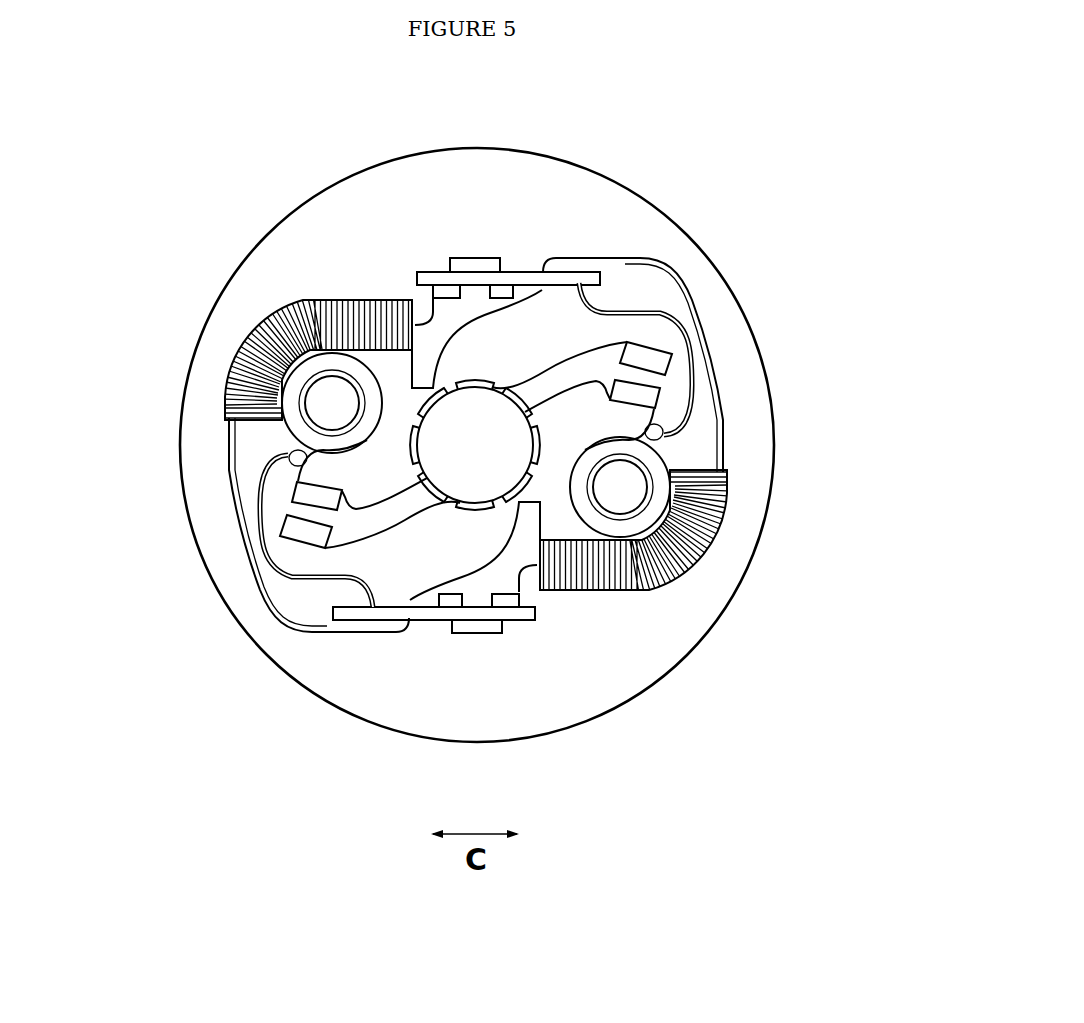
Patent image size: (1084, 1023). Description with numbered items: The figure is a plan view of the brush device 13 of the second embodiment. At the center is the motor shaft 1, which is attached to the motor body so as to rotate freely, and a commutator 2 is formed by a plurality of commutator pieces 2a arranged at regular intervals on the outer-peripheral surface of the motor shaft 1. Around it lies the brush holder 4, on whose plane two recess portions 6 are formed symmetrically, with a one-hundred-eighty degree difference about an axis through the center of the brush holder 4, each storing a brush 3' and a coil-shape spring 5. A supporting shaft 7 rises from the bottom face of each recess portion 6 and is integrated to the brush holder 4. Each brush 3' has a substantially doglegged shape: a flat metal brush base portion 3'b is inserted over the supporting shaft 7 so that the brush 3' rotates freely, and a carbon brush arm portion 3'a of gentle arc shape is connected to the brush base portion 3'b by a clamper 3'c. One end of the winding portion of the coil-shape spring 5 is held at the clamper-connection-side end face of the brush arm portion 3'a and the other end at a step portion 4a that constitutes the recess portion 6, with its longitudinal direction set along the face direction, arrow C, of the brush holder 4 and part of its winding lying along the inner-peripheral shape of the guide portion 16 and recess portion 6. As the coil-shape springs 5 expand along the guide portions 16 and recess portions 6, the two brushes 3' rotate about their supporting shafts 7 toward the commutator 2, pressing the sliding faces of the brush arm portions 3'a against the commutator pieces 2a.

The motor shaft 1 is at (475, 445).
The commutator 2 is at (485, 368).
The commutator pieces 2a is at (477, 512).
The brush 3' is at (553, 382).
The brush arm portion 3'a is at (374, 426).
The brush base portion 3'b is at (472, 445).
The clamper 3'c is at (472, 446).
The brush holder 4 is at (557, 672).
The step portion 4a is at (443, 274).
The coil-shape spring 5 is at (220, 413).
The recess portion 6 is at (422, 552).
The supporting shaft 7 is at (332, 403).
The brush device 13 is at (748, 190).
The guide portion 16 is at (303, 333).